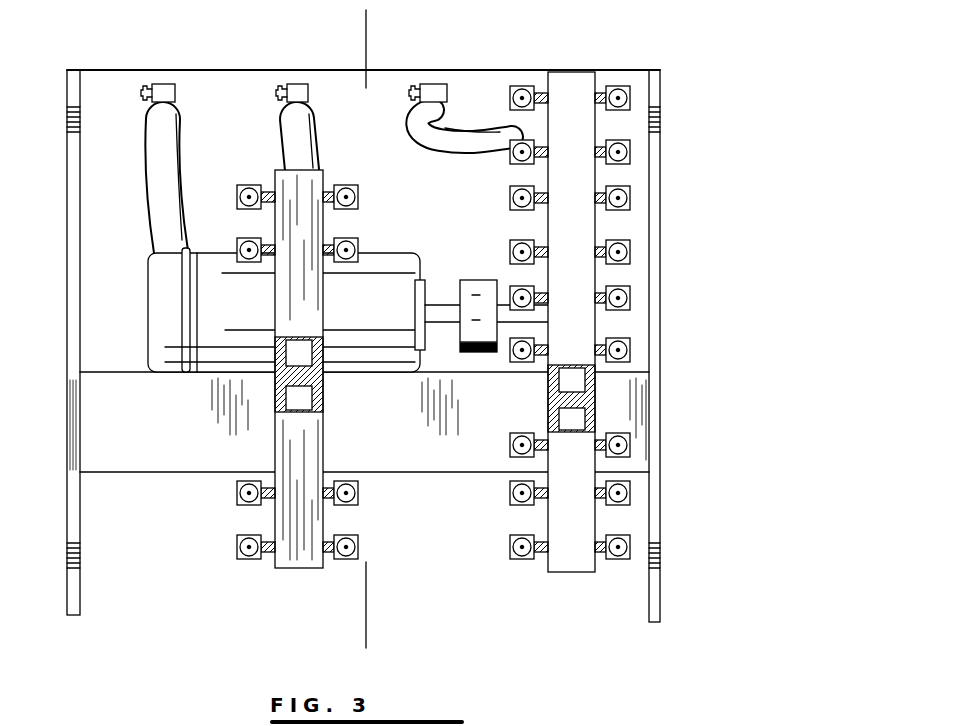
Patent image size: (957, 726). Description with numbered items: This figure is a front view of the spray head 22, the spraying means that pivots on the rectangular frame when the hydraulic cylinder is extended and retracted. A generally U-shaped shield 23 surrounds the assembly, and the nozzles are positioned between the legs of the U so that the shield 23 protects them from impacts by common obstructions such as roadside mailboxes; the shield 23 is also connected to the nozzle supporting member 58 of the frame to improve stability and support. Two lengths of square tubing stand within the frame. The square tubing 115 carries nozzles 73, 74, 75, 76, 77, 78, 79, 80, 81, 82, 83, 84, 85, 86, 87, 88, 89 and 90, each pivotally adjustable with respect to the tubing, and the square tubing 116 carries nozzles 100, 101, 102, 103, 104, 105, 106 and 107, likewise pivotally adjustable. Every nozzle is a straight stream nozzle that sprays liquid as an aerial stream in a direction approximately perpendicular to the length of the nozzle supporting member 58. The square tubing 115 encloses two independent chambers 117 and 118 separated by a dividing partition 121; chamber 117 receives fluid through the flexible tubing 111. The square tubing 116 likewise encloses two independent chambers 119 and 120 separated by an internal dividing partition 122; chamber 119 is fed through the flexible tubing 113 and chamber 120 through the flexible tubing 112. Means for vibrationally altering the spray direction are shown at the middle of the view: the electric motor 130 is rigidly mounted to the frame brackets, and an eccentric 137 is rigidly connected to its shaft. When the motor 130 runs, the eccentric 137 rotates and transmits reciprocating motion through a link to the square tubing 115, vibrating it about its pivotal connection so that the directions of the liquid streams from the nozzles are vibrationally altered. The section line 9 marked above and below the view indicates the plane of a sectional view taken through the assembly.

The section line 9- 9 is at (355, 20).
The spray head 22 is at (427, 346).
The shield 23 is at (662, 325).
The nozzle supporting member 58 is at (405, 437).
The nozzle 73 is at (613, 108).
The nozzle 74 is at (510, 96).
The nozzle 75 is at (613, 161).
The nozzle 76 is at (510, 155).
The nozzle 77 is at (613, 207).
The nozzle 78 is at (510, 200).
The nozzle 79 is at (613, 259).
The nozzle 80 is at (508, 250).
The nozzle 81 is at (612, 310).
The nozzle 82 is at (512, 288).
The nozzle 83 is at (631, 350).
The nozzle 84 is at (510, 355).
The nozzle 85 is at (510, 445).
The nozzle 86 is at (617, 434).
The nozzle 87 is at (510, 493).
The nozzle 88 is at (622, 505).
The nozzle 89 is at (510, 547).
The nozzle 90 is at (625, 560).
The nozzle 100 is at (358, 547).
The nozzle 101 is at (237, 546).
The nozzle 102 is at (358, 493).
The nozzle 103 is at (237, 493).
The nozzle 104 is at (358, 242).
The nozzle 105 is at (240, 241).
The nozzle 106 is at (358, 195).
The nozzle 107 is at (237, 197).
The flexible tubing 111 is at (457, 143).
The flexible tubing 112 is at (292, 147).
The flexible tubing 113 is at (156, 147).
The square tubing 115 is at (578, 573).
The square tubing 116 is at (303, 570).
The chamber 117 is at (573, 376).
The chamber 118 is at (562, 413).
The chamber 119 is at (300, 402).
The chamber 120 is at (298, 348).
The dividing partition 121 is at (562, 399).
The internal dividing partition 122 is at (312, 376).
The electric motor 130 is at (242, 322).
The eccentric 137 is at (468, 281).